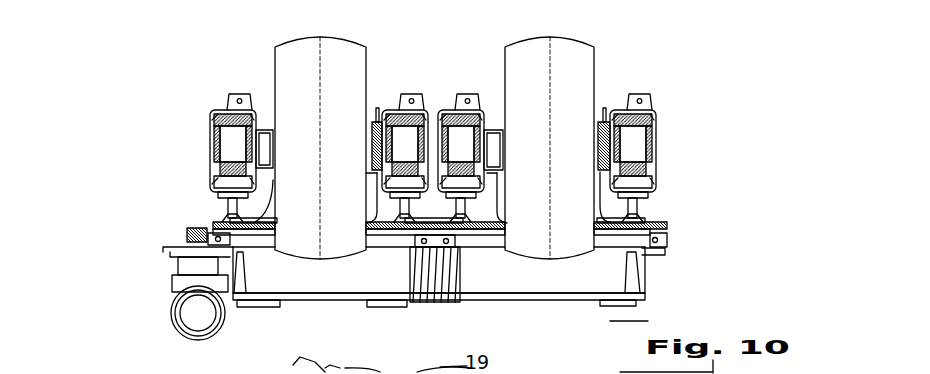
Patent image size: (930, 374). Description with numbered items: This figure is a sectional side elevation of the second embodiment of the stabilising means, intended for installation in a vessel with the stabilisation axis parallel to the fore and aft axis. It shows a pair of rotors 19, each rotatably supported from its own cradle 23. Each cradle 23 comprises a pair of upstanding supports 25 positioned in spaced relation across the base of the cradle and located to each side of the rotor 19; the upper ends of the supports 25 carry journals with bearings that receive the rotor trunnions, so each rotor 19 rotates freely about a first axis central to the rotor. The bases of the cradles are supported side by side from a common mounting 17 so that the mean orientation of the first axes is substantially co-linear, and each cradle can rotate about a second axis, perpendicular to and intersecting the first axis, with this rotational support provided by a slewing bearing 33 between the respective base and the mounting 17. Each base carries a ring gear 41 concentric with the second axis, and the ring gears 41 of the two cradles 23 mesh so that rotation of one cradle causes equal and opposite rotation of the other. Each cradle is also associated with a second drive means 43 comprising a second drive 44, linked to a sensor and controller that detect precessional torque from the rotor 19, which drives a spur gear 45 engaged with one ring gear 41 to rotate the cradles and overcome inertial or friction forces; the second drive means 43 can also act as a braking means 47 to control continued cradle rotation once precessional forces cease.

The common mounting 17 is at (607, 270).
The rotor 19 is at (351, 40).
The cradle 23 is at (216, 212).
The upstanding support 25 is at (228, 203).
The slewing bearing 33 is at (232, 122).
The ring gear 41 is at (667, 230).
The second drive means 43 is at (146, 280).
The second drive 44 is at (180, 330).
The spur gear 45 is at (187, 233).
The braking means 47 is at (153, 312).